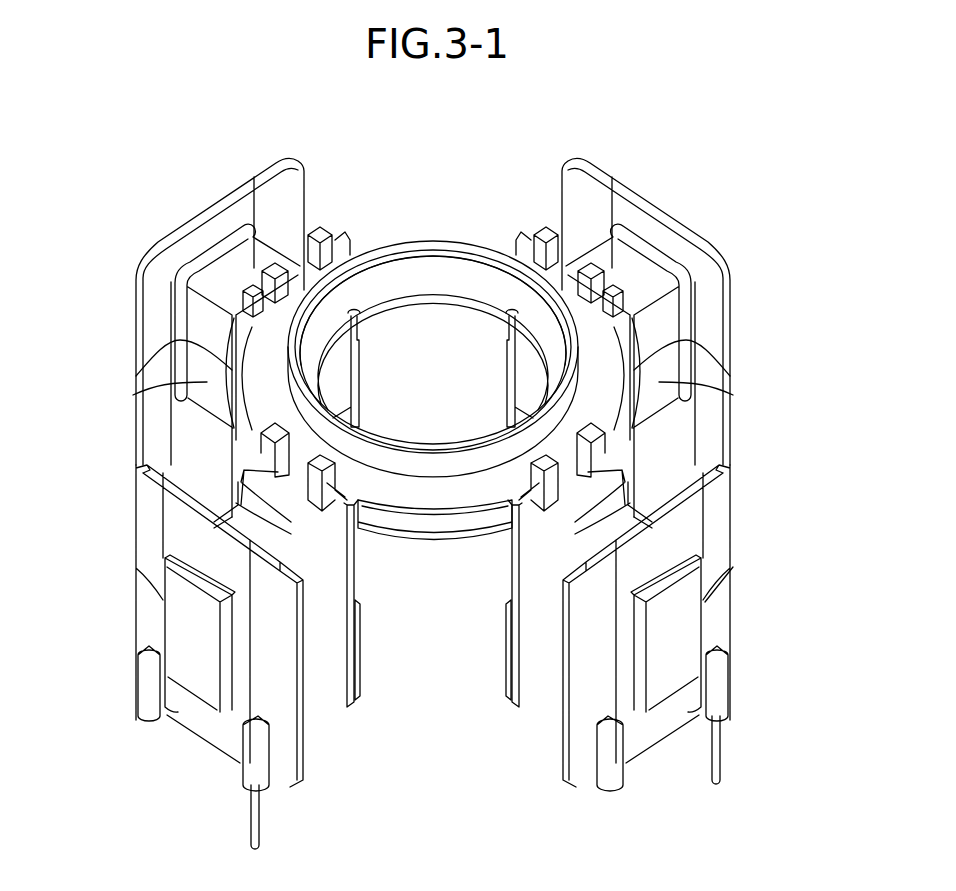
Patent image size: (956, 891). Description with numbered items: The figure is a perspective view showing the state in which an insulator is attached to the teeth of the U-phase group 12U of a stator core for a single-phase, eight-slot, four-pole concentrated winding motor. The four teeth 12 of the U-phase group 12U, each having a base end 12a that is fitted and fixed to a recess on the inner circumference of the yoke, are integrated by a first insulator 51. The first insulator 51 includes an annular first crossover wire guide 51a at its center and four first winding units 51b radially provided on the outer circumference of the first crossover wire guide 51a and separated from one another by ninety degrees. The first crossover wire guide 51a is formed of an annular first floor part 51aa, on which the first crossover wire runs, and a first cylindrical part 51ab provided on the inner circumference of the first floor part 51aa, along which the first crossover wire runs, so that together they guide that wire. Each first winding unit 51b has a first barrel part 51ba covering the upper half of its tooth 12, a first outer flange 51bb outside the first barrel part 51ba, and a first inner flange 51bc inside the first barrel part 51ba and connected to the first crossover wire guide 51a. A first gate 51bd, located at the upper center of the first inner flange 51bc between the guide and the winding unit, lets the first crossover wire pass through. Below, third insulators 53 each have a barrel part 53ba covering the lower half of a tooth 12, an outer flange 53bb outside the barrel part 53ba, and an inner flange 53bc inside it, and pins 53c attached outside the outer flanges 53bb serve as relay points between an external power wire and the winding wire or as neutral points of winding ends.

The first insulator 51 is at (433, 405).
The first crossover wire guide 51a is at (433, 432).
The first floor part 51aa is at (402, 490).
The first cylindrical part 51ab is at (450, 465).
The first winding unit 51b is at (433, 319).
The first barrel part 51ba is at (238, 258).
The first outer flange 51bb is at (170, 218).
The first inner flange 51bc is at (622, 455).
The first gate 51bd is at (301, 457).
The third insulator 53 is at (434, 594).
The barrel part 53ba is at (207, 383).
The outer flange 53bb is at (285, 760).
The inner flange 53bc is at (333, 680).
The pin 53c is at (720, 745).
The U-phase group 12U is at (484, 691).
The tooth 12 is at (449, 691).
The base end 12a is at (678, 678).